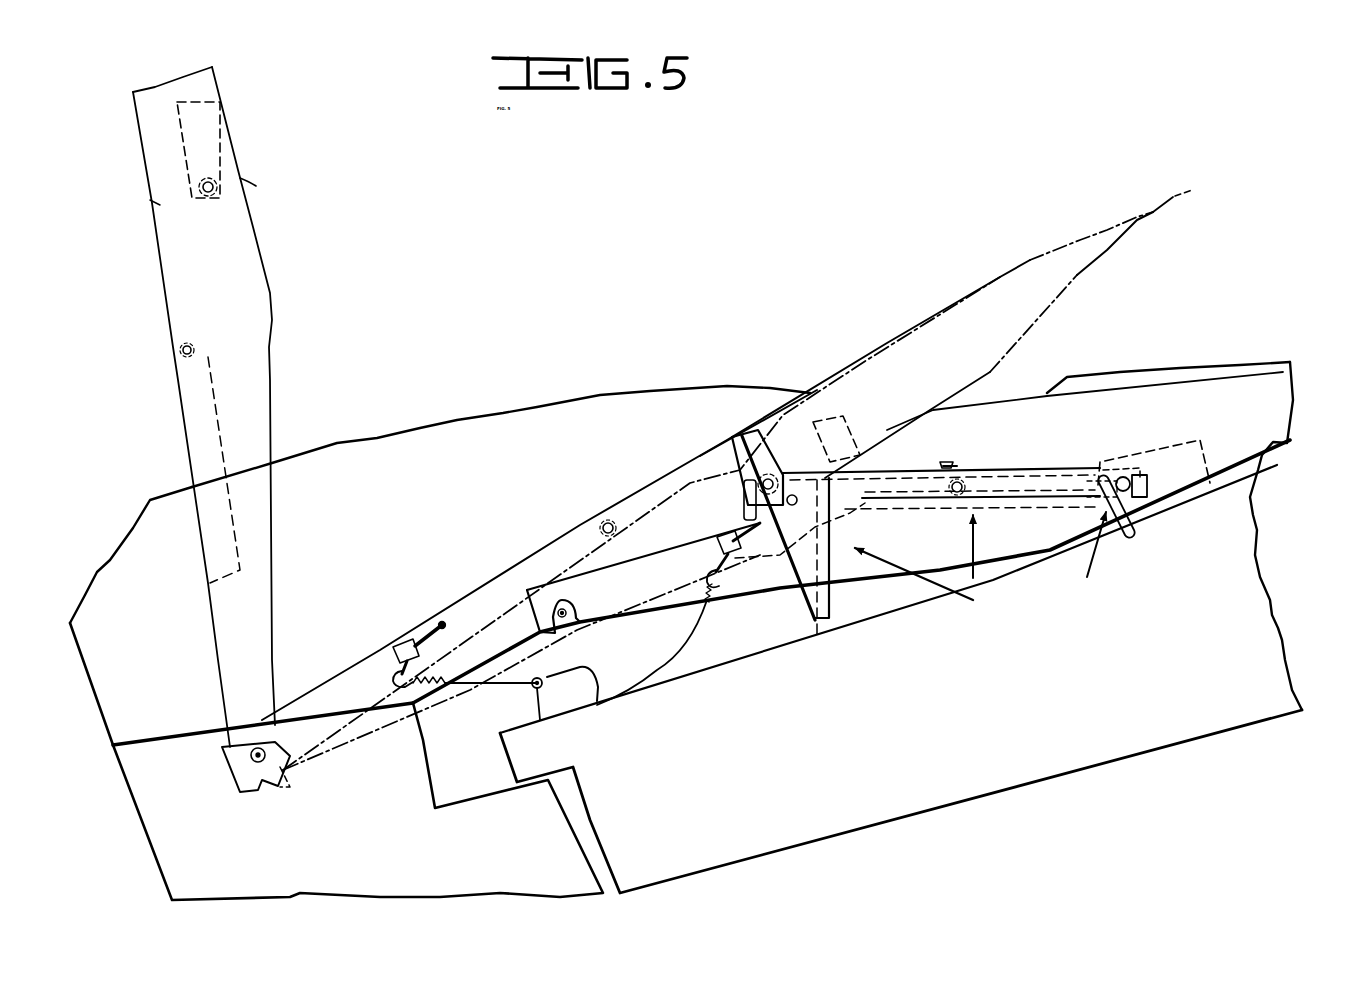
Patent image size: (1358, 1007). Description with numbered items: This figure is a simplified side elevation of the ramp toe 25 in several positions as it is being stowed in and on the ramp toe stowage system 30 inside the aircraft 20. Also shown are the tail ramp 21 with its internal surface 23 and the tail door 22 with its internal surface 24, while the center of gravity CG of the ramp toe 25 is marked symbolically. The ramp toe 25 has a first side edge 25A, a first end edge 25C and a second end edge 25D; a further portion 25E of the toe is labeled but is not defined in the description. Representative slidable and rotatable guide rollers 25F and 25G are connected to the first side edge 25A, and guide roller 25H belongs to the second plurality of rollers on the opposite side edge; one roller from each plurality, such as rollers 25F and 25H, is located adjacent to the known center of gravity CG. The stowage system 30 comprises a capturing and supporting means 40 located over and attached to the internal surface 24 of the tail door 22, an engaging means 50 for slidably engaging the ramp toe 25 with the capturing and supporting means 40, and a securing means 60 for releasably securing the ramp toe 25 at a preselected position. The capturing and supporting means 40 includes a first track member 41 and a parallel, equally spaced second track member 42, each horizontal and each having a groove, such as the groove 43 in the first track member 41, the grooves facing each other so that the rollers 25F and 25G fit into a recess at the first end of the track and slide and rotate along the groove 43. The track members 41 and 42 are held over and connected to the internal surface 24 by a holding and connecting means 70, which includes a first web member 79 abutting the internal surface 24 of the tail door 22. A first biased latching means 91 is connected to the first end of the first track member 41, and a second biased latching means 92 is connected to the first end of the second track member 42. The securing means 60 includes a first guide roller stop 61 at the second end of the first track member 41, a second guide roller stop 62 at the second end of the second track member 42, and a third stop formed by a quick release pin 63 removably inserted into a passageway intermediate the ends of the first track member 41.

The aircraft 20 is at (572, 393).
The tail ramp 21 is at (363, 863).
The tail door 22 is at (715, 820).
The internal surface of tail ramp 23 is at (160, 745).
The internal surface of tail door 24 is at (1233, 497).
The ramp toe 25 is at (237, 238).
The first side edge 25A is at (263, 308).
The first end edge 25C is at (1194, 197).
The second end edge 25D is at (527, 615).
The arm face 25E is at (152, 203).
The guide roller 25F is at (212, 180).
The guide roller 25G is at (183, 352).
The guide roller 25H is at (258, 186).
The ramp toe stowage system 30 is at (906, 455).
The capturing and supporting means 40 is at (973, 600).
The first track member 41 is at (927, 500).
The second track member 42 is at (1053, 485).
The groove 43 is at (866, 478).
The engaging means 50 is at (1054, 462).
The securing means 60 is at (952, 462).
The first ramp toe guide roller stop 61 is at (1148, 466).
The second ramp toe guide roller stop 62 is at (1132, 474).
The quick release pin 63 is at (944, 463).
The holding and connecting means 70 is at (801, 602).
The first web member 79 is at (937, 558).
The first biased latching means 91 is at (746, 424).
The second biased latching means 92 is at (770, 426).
The center of gravity CG is at (210, 122).